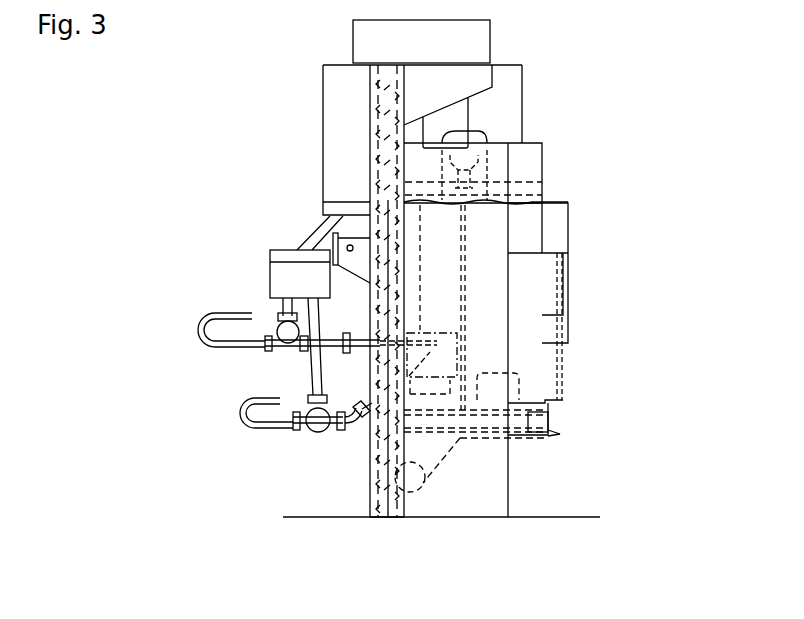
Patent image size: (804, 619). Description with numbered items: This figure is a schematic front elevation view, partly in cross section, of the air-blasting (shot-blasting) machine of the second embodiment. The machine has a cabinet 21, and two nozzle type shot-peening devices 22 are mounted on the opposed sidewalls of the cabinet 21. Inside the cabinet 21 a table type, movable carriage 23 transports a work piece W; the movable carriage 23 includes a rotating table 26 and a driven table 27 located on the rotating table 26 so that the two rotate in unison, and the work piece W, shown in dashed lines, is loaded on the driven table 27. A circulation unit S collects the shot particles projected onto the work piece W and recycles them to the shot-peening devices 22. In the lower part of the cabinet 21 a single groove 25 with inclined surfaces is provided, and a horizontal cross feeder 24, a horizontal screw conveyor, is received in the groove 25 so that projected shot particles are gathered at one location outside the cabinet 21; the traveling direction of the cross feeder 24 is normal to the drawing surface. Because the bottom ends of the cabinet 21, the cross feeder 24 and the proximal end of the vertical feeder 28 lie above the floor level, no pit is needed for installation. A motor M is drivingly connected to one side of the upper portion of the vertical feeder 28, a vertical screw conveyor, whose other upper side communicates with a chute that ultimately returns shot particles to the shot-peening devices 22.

The motor M is at (468, 113).
The cabinet 21 is at (538, 162).
The vertical feeder 28 is at (378, 136).
The nozzle type shot-peening device 22 is at (342, 333).
The work piece W is at (448, 355).
The driven table 27 is at (523, 383).
The rotating table 26 is at (563, 400).
The movable carriage 23 is at (548, 433).
The cross feeder 24 is at (418, 490).
The groove 25 is at (437, 463).
The circulation unit S is at (356, 492).